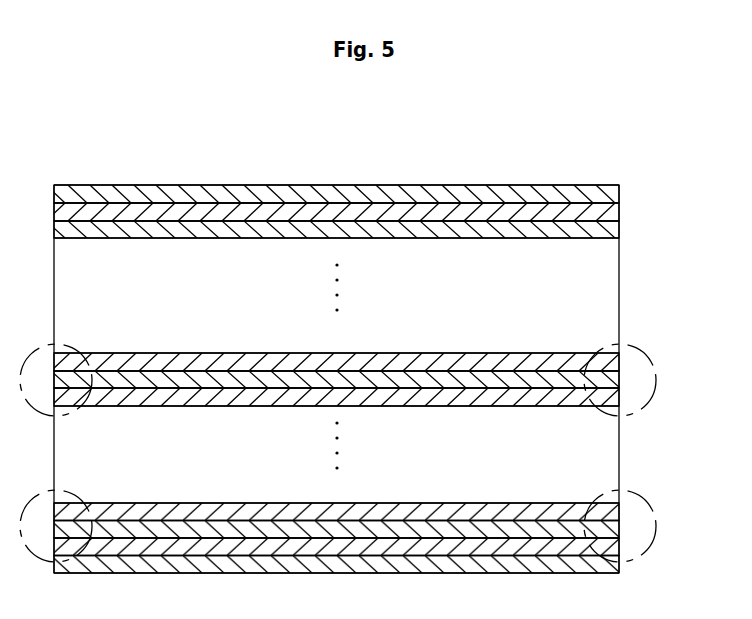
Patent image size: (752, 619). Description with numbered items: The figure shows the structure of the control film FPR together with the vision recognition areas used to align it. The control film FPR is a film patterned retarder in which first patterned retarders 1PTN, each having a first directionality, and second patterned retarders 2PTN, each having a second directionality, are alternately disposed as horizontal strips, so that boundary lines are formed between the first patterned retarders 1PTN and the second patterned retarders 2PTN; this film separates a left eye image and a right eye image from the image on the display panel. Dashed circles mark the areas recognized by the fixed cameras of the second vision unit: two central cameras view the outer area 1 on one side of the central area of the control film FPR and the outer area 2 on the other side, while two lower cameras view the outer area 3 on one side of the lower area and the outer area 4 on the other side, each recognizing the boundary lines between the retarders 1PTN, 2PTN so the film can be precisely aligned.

The control film FPR is at (274, 158).
The first patterned retarder 1PTN is at (608, 196).
The second patterned retarder 2PTN is at (612, 213).
The outer area 1 is at (48, 372).
The outer area 2 is at (626, 374).
The outer area 3 is at (47, 518).
The outer area 4 is at (626, 520).